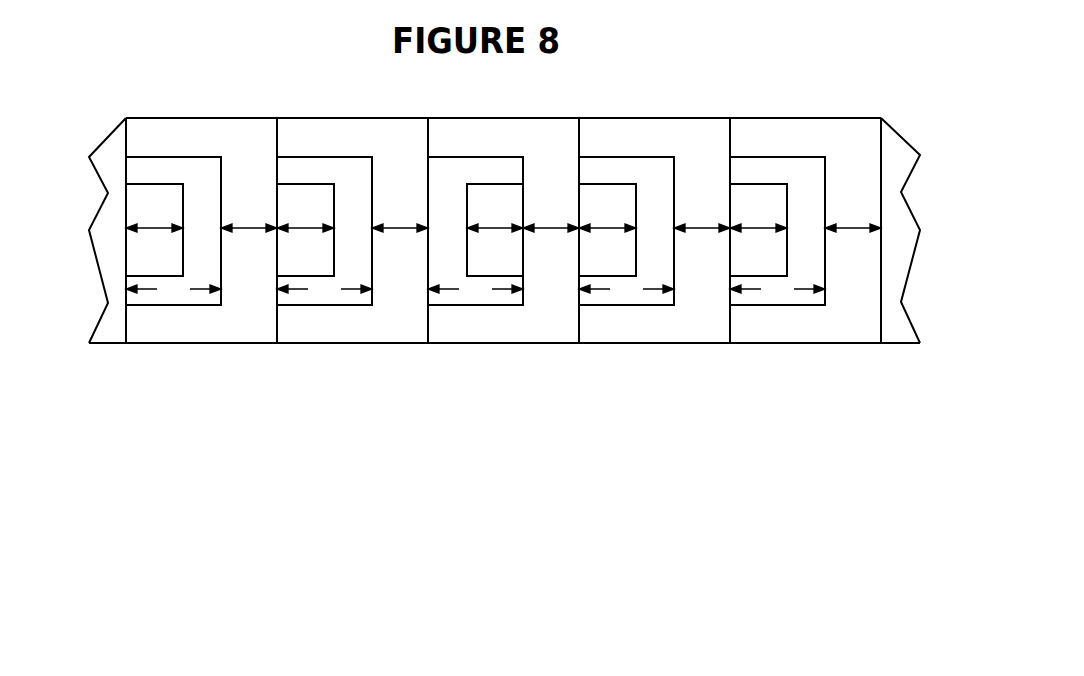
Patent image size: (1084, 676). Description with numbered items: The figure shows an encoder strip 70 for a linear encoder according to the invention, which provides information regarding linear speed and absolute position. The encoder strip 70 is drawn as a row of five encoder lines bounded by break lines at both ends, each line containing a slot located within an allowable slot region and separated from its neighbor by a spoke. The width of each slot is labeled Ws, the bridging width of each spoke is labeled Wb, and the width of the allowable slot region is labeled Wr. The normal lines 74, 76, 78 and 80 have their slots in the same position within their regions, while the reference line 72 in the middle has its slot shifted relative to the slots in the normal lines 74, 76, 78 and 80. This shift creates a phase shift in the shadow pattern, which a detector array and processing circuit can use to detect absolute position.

The encoder strip 70 is at (562, 455).
The reference line 72 is at (504, 343).
The normal line 74 is at (203, 343).
The normal line 76 is at (353, 343).
The normal line 78 is at (653, 343).
The normal line 80 is at (805, 343).